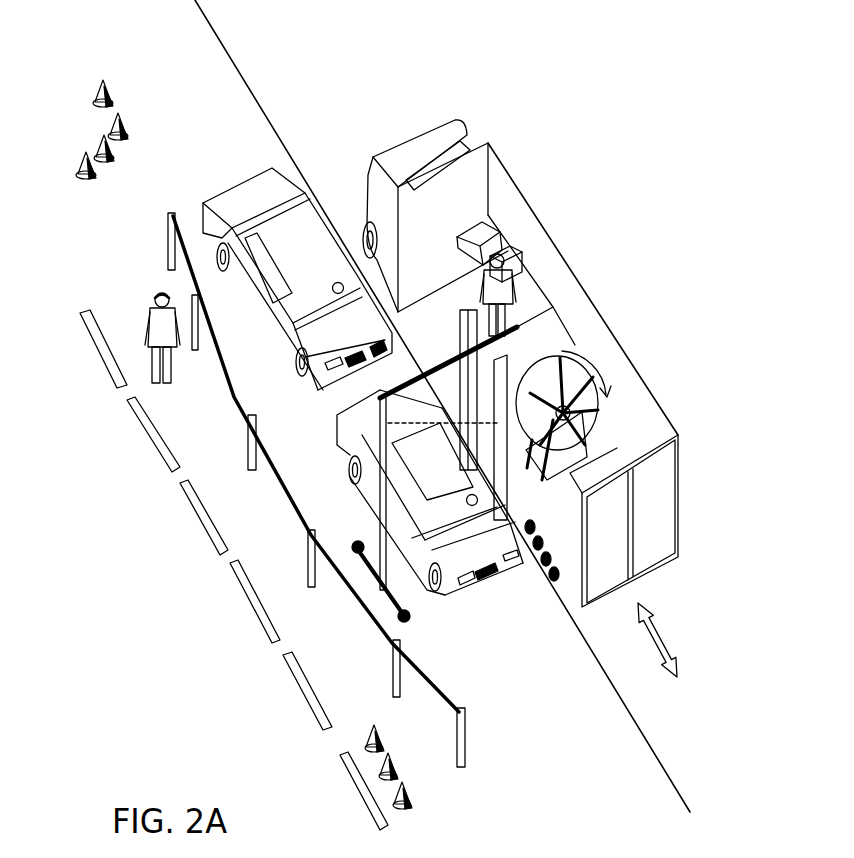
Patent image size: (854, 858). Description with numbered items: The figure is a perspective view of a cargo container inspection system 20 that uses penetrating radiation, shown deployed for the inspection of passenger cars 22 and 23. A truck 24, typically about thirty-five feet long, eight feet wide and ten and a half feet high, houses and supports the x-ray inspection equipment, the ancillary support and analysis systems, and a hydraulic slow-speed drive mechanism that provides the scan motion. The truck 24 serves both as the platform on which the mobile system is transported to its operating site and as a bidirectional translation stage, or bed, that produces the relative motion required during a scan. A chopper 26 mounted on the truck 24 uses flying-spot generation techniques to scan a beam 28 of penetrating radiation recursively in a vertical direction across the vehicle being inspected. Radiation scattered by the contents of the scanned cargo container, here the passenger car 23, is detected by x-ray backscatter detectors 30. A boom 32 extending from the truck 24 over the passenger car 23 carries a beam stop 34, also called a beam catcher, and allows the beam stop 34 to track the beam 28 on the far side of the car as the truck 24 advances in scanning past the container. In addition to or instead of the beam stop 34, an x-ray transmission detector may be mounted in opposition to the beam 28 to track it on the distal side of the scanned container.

The cargo container inspection system 20 is at (616, 247).
The passenger car 22 is at (292, 340).
The passenger car 23 is at (338, 438).
The truck 24 is at (650, 370).
The chopper 26 is at (567, 353).
The beam 28 is at (424, 425).
The x-ray backscatter detectors 30 is at (513, 492).
The boom 32 is at (455, 356).
The beam stop 34 is at (378, 524).